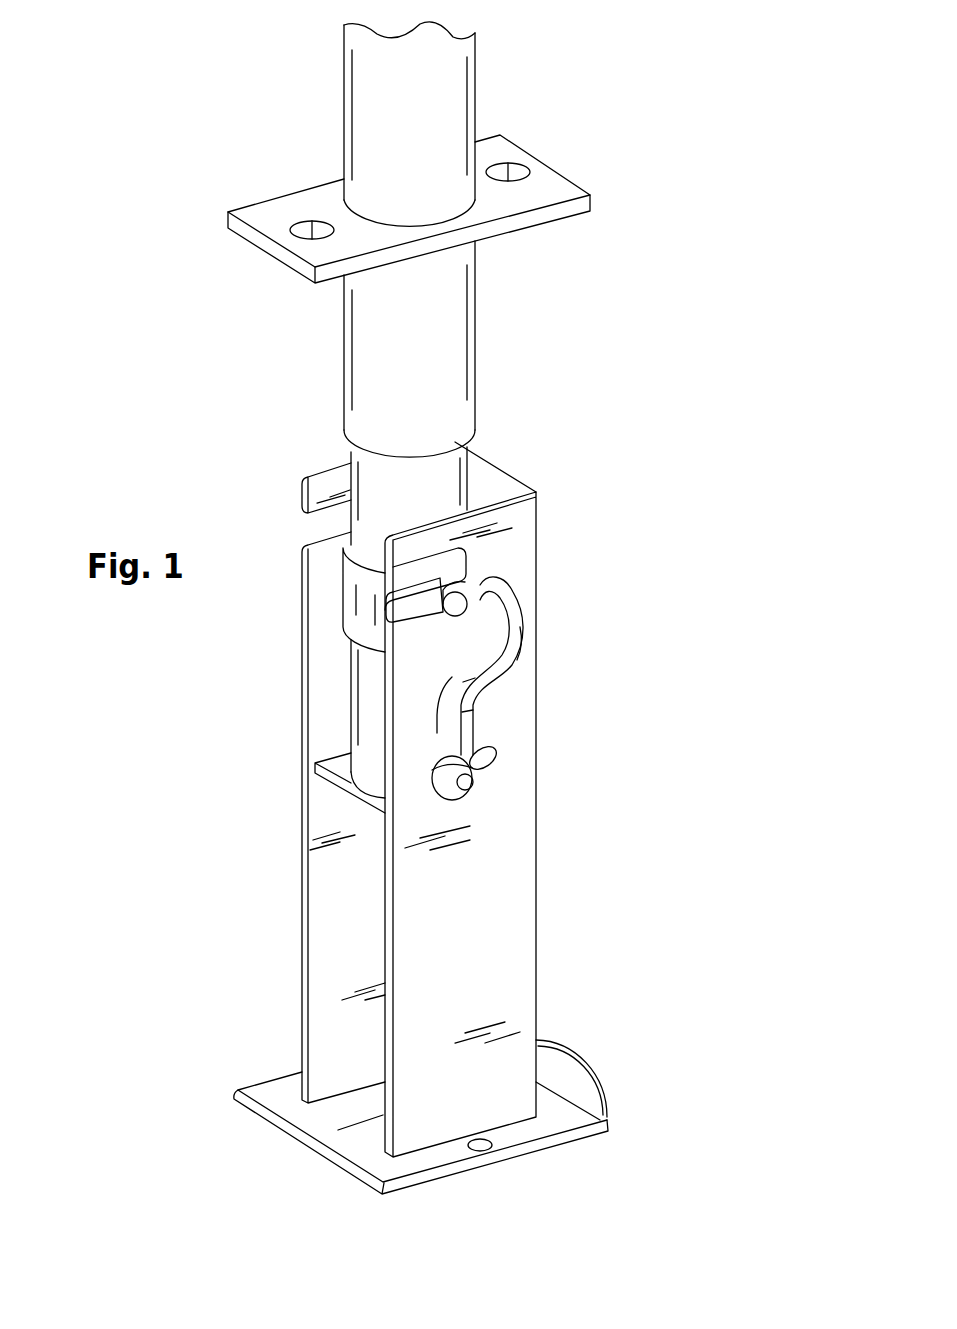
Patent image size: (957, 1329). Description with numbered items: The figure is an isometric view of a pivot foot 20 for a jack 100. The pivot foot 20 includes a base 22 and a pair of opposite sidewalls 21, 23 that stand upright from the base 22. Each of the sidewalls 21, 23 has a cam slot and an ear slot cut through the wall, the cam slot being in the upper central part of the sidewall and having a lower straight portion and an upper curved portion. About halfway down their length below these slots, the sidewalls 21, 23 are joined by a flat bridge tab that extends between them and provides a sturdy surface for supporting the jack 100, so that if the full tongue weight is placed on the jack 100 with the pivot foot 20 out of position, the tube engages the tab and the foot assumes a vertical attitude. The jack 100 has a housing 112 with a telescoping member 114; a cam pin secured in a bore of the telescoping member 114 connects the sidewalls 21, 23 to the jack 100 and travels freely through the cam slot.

The jack 100 is at (116, 133).
The housing 112 is at (475, 67).
The telescoping member 114 is at (347, 449).
The pivot foot 20 is at (618, 732).
The sidewall 21 is at (537, 900).
The base 22 is at (592, 1081).
The sidewall 23 is at (302, 871).